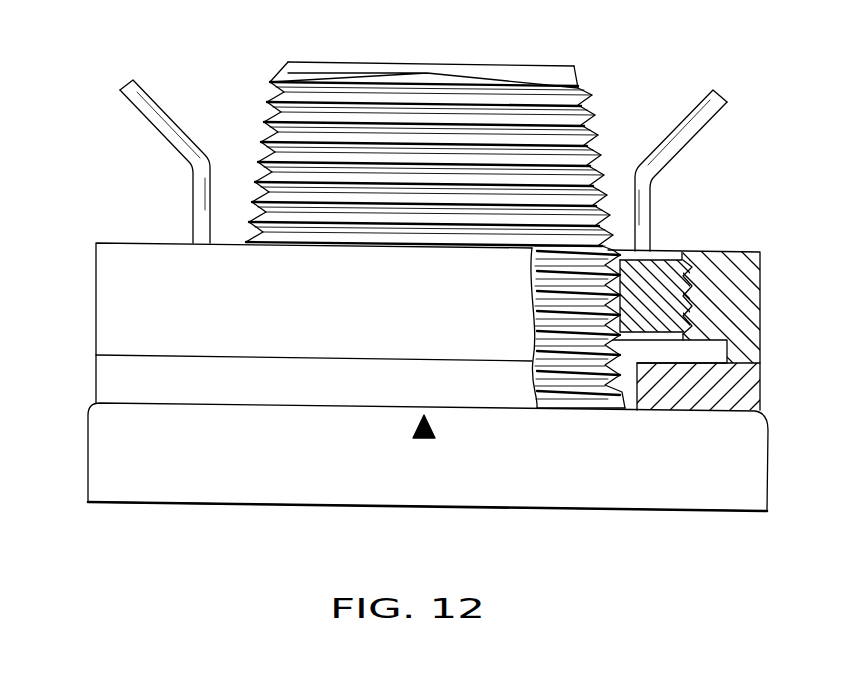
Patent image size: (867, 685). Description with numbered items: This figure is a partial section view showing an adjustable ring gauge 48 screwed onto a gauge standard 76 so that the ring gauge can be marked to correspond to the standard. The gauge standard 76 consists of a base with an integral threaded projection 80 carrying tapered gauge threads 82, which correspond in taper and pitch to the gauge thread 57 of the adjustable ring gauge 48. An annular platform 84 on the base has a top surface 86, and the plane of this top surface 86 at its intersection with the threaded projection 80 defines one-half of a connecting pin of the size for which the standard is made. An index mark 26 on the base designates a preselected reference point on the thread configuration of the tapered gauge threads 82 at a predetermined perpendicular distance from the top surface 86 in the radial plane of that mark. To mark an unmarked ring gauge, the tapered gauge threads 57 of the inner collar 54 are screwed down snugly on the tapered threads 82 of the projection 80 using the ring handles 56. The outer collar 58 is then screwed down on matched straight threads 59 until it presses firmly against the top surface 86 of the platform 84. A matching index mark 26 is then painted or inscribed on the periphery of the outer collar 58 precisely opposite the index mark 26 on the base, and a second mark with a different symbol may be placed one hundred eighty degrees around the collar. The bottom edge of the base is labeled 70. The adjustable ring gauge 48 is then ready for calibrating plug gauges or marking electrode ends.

The index mark 26 is at (435, 432).
The adjustable ring gauge 48 is at (117, 242).
The inner collar 54 is at (664, 260).
The ring handles 56 is at (167, 117).
The gauge thread 57 is at (617, 262).
The outer collar 58 is at (95, 332).
The straight threads 59 is at (700, 263).
The base plate bottom 70 is at (740, 500).
The gauge standard 76 is at (80, 449).
The threaded projection 80 is at (490, 62).
The tapered gauge threads 82 is at (592, 115).
The annular platform 84 is at (761, 401).
The top surface 86 is at (752, 358).